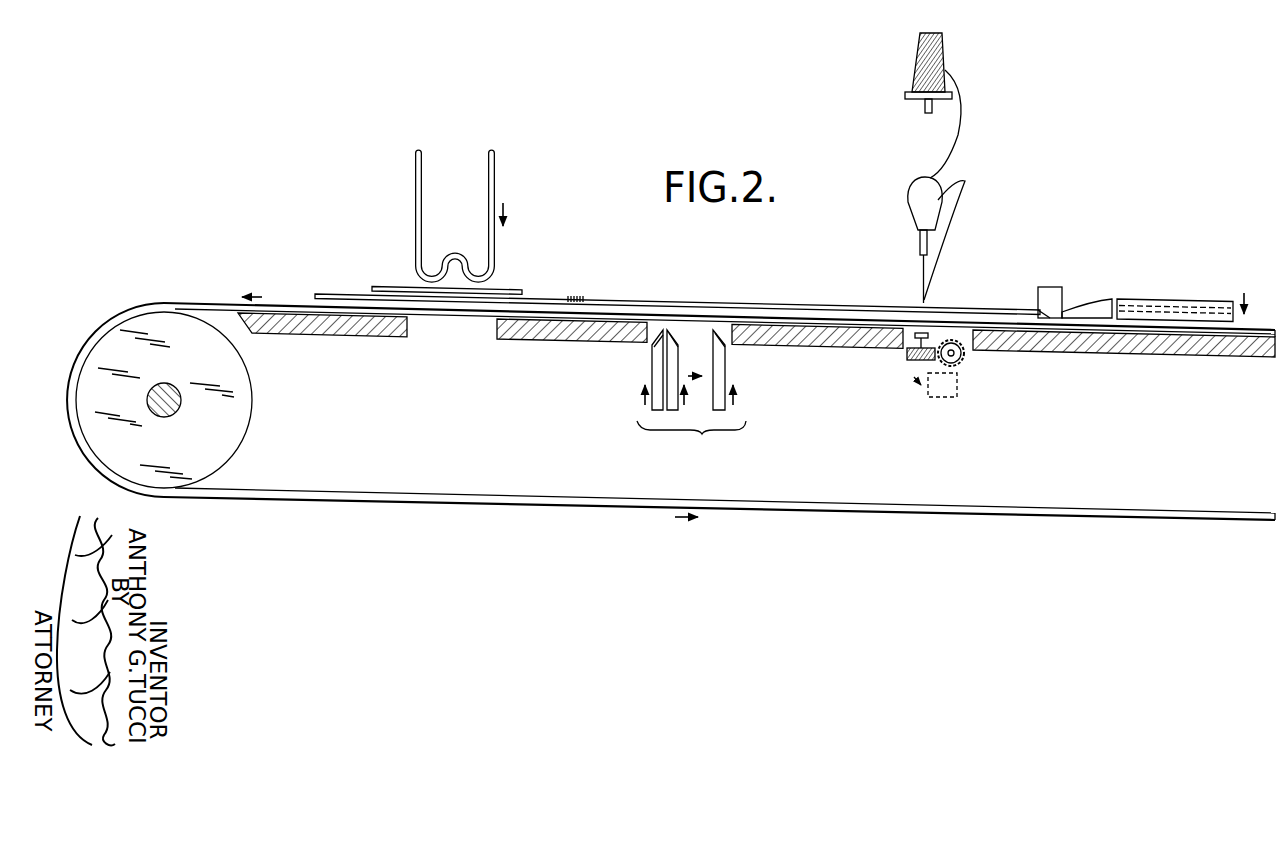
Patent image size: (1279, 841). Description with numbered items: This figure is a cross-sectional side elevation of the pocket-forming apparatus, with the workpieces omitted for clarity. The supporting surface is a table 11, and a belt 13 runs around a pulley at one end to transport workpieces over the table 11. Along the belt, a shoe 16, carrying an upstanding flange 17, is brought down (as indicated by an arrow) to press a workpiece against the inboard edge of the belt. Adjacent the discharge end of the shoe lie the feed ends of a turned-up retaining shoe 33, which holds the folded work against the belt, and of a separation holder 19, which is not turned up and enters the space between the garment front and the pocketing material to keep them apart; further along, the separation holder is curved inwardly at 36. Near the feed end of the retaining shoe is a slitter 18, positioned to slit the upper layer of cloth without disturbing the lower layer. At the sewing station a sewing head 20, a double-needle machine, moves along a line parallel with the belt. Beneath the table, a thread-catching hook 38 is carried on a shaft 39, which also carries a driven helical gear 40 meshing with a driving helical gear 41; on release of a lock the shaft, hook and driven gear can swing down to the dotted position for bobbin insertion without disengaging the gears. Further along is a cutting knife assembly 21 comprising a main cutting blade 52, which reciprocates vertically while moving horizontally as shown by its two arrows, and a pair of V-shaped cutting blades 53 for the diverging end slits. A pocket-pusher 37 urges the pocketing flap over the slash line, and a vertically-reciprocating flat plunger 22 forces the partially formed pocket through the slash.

The table 11 is at (336, 336).
The belt 13 is at (193, 303).
The shoe 16 is at (1204, 300).
The upstanding flange 17 is at (1162, 300).
The slitter 18 is at (1050, 286).
The separation holder 19 is at (1112, 300).
The sewing head 20 is at (908, 202).
The cutting knife assembly 21 is at (695, 393).
The flat plunger 22 is at (416, 198).
The retaining shoe 33 is at (818, 304).
The curved portion of separation holder 36 is at (577, 296).
The pocket-pusher 37 is at (376, 287).
The thread-catching hook 38 is at (914, 332).
The shaft 39 is at (907, 355).
The driven helical gear 40 is at (910, 372).
The driving helical gear 41 is at (961, 359).
The main cutting blade 52 is at (678, 358).
The V-shaped cutting blades 53 is at (652, 363).